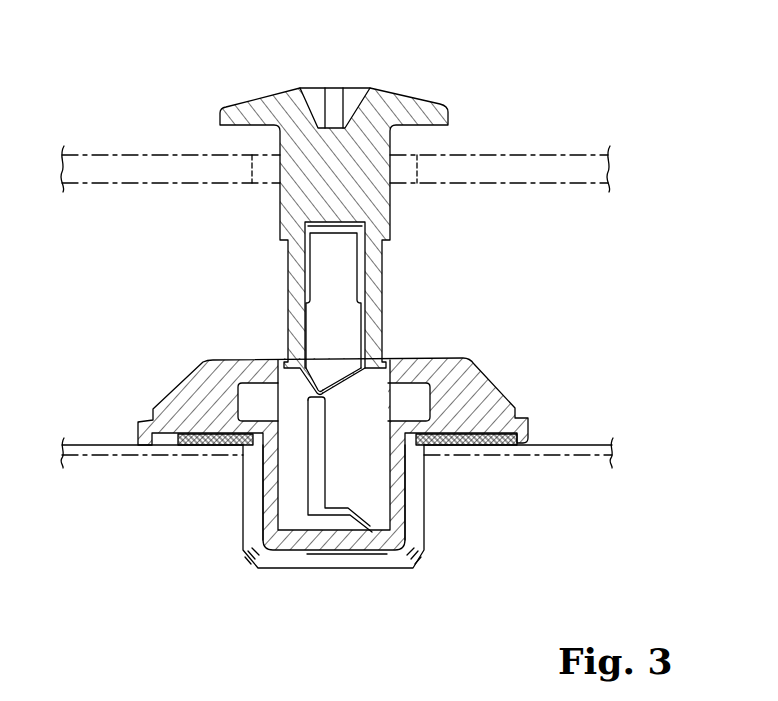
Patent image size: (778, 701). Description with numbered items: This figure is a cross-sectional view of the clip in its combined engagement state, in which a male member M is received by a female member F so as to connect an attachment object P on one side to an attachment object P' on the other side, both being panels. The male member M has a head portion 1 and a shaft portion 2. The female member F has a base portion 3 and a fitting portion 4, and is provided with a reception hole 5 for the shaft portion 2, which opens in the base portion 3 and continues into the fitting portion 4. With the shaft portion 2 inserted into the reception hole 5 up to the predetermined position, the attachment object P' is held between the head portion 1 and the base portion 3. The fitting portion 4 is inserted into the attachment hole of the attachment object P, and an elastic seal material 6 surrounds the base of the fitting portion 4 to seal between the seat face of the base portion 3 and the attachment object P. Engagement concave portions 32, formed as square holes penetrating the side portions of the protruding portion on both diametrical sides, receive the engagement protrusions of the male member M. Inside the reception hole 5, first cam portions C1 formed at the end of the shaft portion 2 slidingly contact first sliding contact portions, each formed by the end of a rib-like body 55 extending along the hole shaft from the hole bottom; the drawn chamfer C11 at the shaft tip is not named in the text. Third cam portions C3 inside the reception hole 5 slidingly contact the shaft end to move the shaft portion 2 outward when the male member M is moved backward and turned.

The head portion 1 is at (385, 90).
The male member M is at (427, 101).
The attachment object on the other side P' is at (335, 136).
The attachment object on one side P is at (337, 418).
The shaft portion 2 is at (390, 232).
The first cam portion C1 is at (315, 390).
The chamfer at screw tip C11 is at (328, 390).
The base portion 3 is at (487, 385).
The engagement concave portion 32 is at (273, 408).
The reception hole 5 is at (378, 485).
The fitting portion 4 is at (420, 530).
The elastic seal material 6 is at (207, 452).
The female member F is at (253, 566).
The third cam portion C3 is at (384, 527).
The rib-like body 55 is at (315, 460).